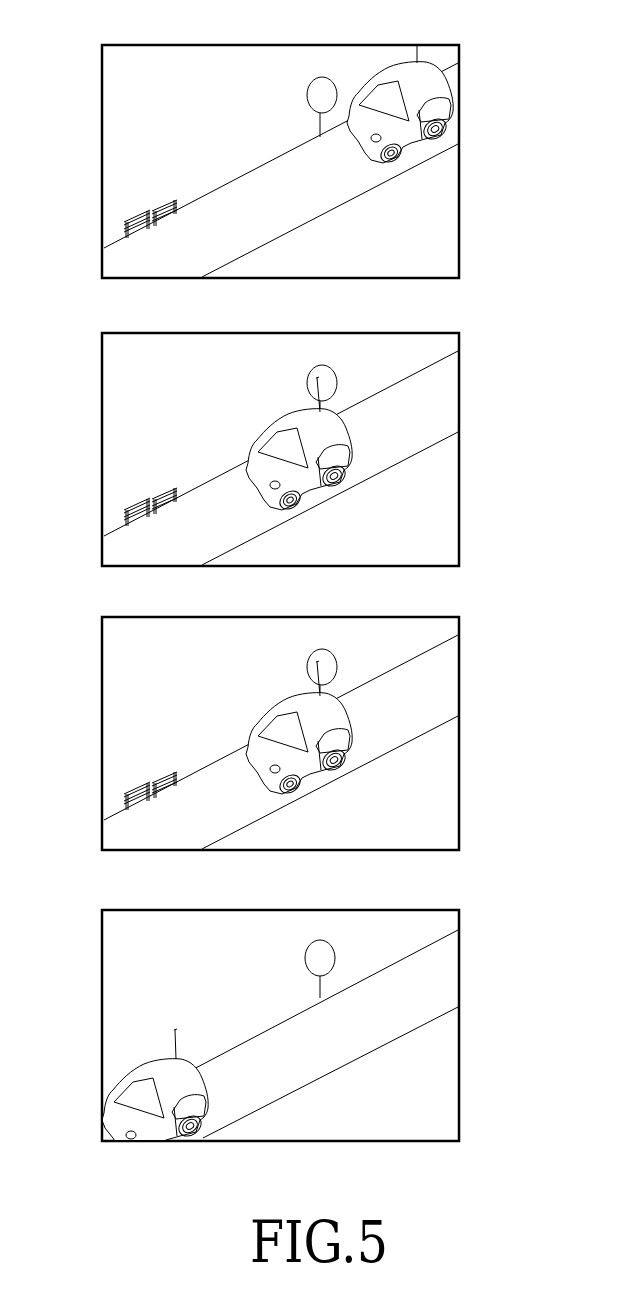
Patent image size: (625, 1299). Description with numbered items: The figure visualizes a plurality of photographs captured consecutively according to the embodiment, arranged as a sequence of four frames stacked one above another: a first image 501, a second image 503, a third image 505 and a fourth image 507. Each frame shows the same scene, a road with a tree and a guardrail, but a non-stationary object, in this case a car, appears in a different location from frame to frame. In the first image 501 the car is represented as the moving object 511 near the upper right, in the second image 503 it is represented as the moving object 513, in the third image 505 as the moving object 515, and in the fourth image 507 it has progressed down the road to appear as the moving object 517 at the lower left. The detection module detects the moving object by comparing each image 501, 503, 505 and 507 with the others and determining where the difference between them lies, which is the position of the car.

The image 501 is at (430, 45).
The image 503 is at (430, 333).
The image 505 is at (430, 617).
The image 507 is at (430, 910).
The non-stationary object 511 is at (432, 89).
The non-stationary object 513 is at (325, 430).
The non-stationary object 515 is at (325, 714).
The non-stationary object 517 is at (156, 1079).